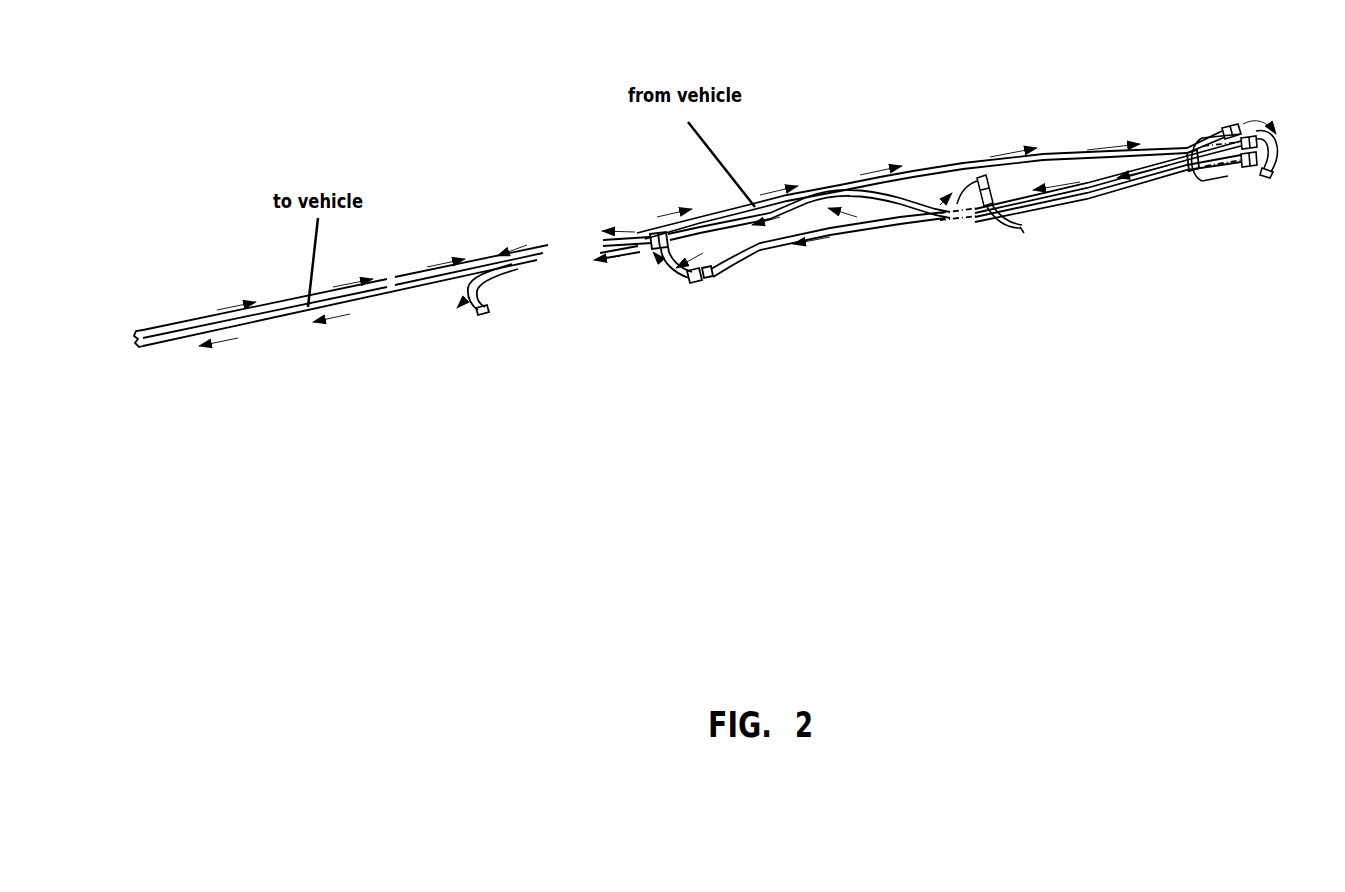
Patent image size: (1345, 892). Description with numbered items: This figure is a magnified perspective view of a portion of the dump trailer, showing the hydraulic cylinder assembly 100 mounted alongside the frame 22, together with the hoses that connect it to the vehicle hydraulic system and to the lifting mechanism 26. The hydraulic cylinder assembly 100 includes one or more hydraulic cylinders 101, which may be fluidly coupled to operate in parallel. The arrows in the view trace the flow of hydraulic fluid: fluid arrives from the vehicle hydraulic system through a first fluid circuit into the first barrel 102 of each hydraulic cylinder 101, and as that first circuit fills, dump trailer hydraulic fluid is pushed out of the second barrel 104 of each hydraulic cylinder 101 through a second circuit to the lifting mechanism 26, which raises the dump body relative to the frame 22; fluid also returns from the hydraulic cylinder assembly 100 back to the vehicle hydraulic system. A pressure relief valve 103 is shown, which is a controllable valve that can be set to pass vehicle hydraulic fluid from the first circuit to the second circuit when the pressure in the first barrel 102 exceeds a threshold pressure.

The frame 22 is at (442, 252).
The lifting mechanism 26 is at (598, 185).
The hydraulic cylinder assembly 100 is at (1075, 148).
The hydraulic cylinder 101 is at (1264, 161).
The first barrel 102 is at (1038, 220).
The pressure relief valve 103 is at (1247, 177).
The second barrel 104 is at (840, 245).